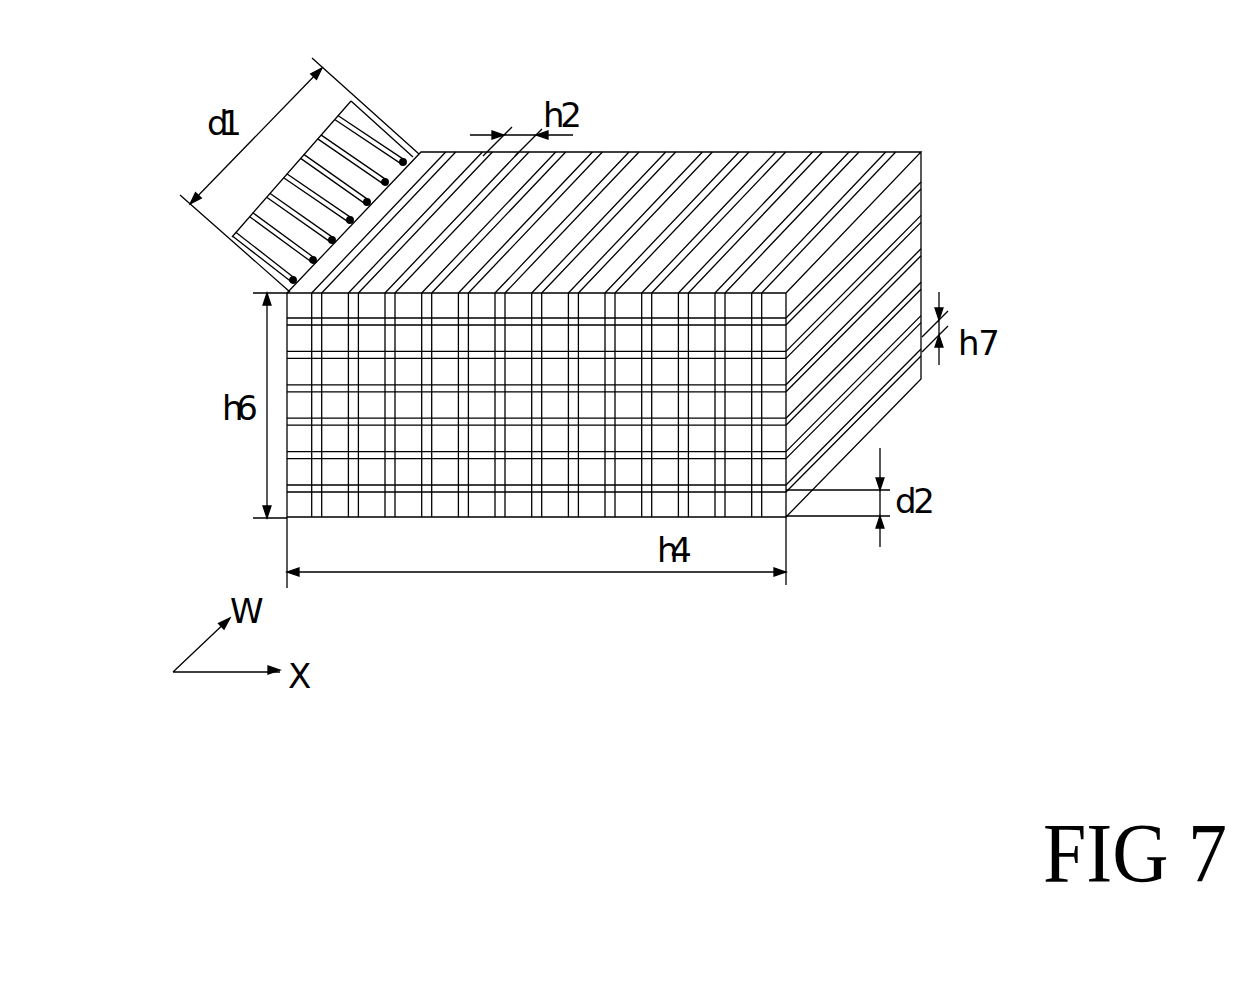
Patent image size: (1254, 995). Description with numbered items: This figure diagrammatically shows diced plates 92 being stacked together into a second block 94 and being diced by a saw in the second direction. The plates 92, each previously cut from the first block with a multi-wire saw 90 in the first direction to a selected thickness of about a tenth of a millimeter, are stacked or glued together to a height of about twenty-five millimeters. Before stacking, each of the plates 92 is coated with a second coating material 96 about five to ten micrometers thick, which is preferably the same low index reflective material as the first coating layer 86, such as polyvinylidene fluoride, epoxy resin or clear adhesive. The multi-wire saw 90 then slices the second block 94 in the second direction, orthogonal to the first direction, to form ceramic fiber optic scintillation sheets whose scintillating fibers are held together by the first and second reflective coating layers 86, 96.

The first coating layer 86 is at (357, 508).
The multi-wire saw 90 is at (323, 131).
The plates 92 is at (921, 297).
The second block 94 is at (783, 103).
The second coating material 96 is at (921, 220).